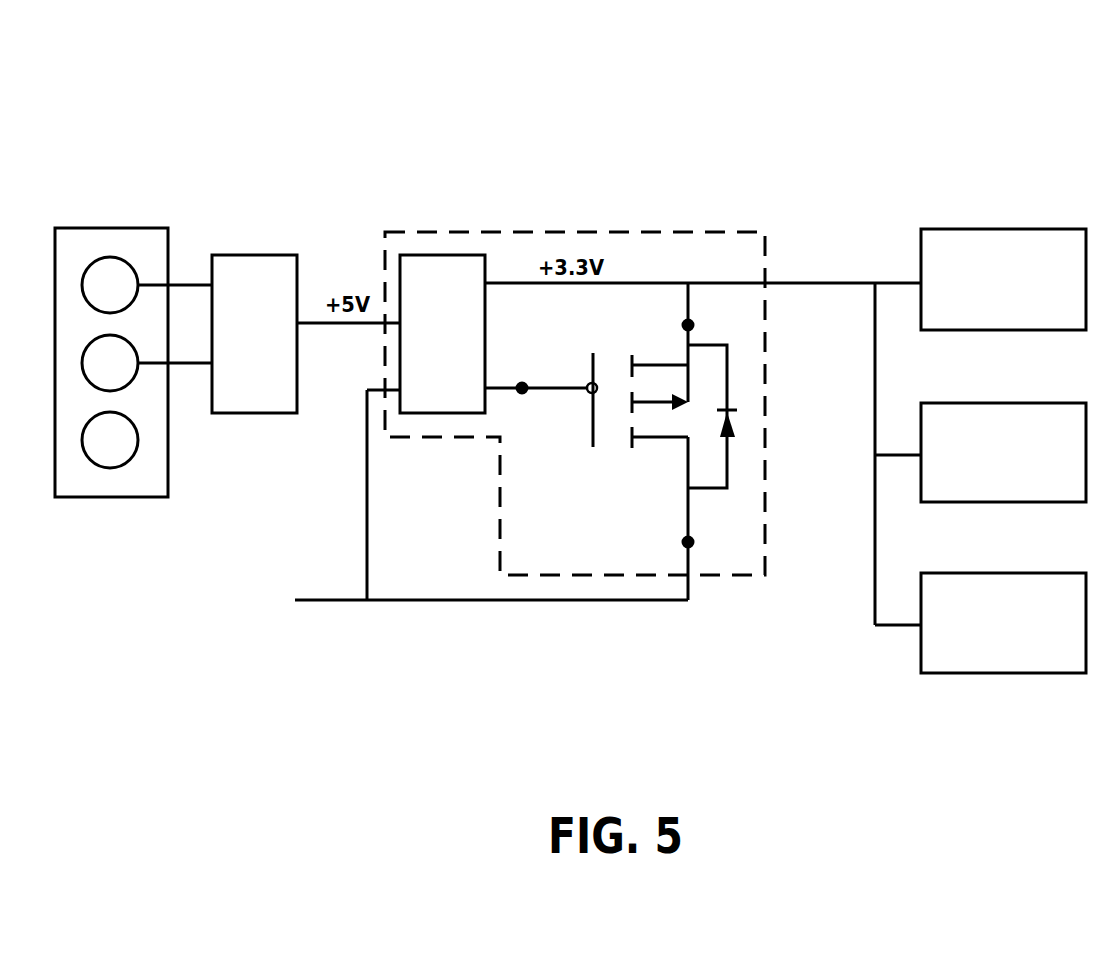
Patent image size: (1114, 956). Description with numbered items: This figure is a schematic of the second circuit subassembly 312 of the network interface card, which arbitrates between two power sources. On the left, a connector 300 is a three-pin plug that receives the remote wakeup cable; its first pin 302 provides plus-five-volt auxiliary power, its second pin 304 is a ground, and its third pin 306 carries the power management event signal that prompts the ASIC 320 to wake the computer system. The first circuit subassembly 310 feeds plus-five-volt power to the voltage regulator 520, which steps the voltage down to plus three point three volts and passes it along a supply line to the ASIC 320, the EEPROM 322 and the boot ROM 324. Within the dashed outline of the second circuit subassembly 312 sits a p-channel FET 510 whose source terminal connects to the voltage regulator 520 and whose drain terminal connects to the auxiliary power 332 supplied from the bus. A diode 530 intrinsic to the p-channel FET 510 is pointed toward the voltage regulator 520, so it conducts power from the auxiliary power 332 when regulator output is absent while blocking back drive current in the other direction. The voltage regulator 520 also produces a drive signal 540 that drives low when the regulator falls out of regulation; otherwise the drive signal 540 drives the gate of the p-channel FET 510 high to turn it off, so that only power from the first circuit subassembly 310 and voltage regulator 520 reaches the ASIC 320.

The connector 300 is at (98, 319).
The first pin 302 is at (147, 285).
The second pin 304 is at (147, 363).
The third pin 306 is at (110, 440).
The first circuit subassembly 310 is at (294, 219).
The second circuit subassembly 312 is at (601, 320).
The application specific integrated circuit (ASIC) 320 is at (1003, 279).
The electrically erasable programmable ROM (EEPROM) 322 is at (1003, 452).
The boot ROM 324 is at (1003, 623).
The +3.3V auxiliary power 332 is at (454, 531).
The p-channel FET 510 is at (628, 441).
The voltage regulator 520 is at (494, 219).
The diode 530 is at (726, 515).
The drive signal 540 is at (541, 414).